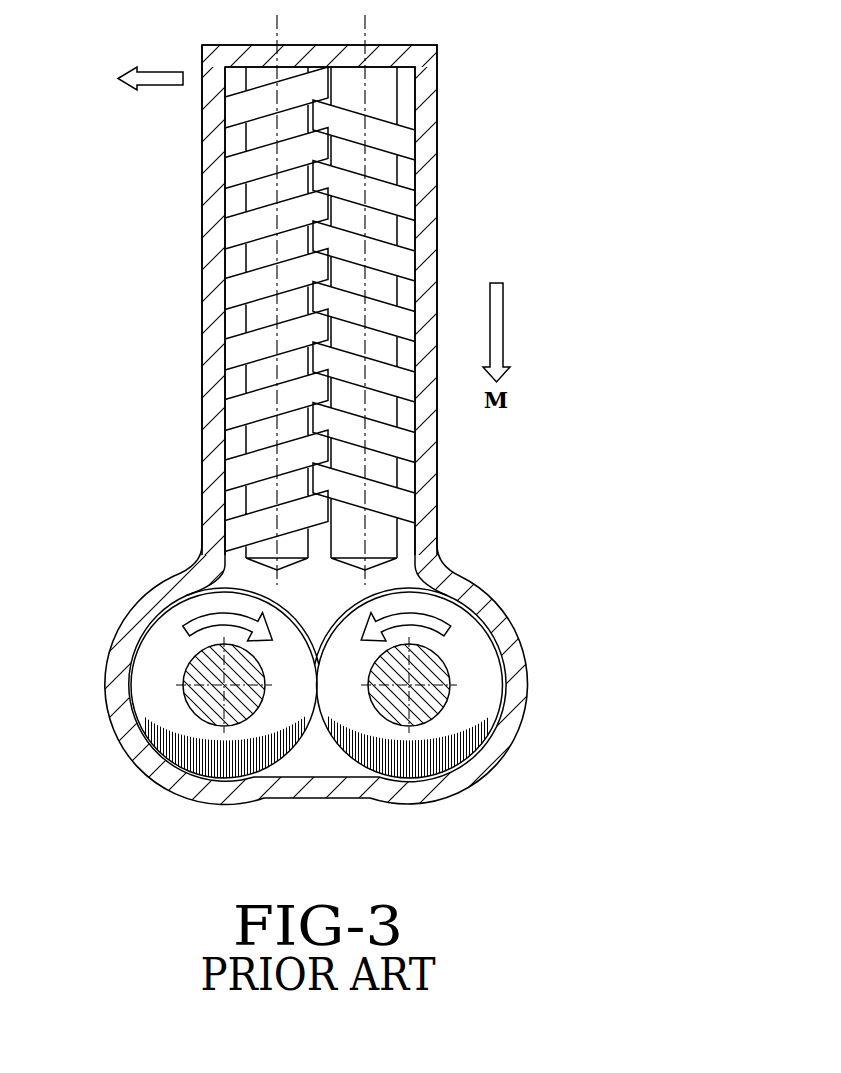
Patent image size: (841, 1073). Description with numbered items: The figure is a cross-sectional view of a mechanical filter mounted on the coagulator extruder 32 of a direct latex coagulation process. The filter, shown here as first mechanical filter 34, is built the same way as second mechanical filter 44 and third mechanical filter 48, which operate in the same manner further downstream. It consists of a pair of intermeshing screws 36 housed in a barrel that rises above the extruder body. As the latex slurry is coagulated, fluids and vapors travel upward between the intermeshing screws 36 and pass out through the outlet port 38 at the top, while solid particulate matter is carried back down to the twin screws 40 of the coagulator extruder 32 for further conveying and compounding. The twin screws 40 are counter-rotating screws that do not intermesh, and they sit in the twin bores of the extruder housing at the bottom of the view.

The coagulator extruder 32 is at (377, 536).
The first mechanical filter 34 is at (415, 296).
The second mechanical filter 44 is at (415, 296).
The third mechanical filter 48 is at (440, 72).
The intermeshing screws 36 is at (245, 225).
The outlet port 38 is at (212, 90).
The counter-rotating screws 40 is at (187, 735).